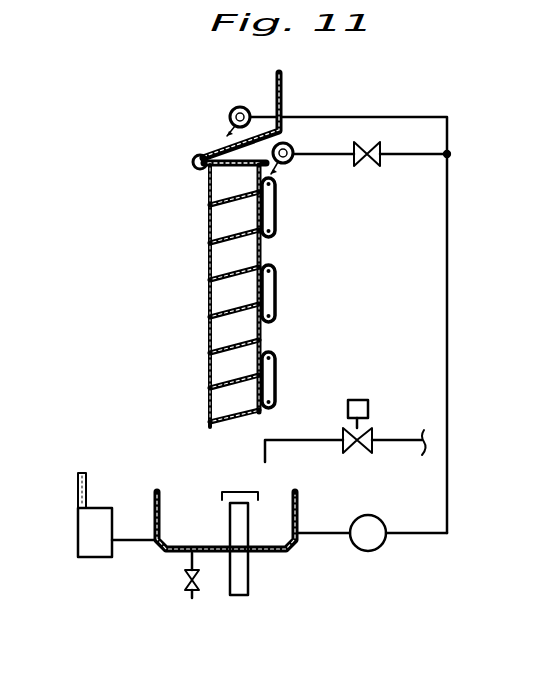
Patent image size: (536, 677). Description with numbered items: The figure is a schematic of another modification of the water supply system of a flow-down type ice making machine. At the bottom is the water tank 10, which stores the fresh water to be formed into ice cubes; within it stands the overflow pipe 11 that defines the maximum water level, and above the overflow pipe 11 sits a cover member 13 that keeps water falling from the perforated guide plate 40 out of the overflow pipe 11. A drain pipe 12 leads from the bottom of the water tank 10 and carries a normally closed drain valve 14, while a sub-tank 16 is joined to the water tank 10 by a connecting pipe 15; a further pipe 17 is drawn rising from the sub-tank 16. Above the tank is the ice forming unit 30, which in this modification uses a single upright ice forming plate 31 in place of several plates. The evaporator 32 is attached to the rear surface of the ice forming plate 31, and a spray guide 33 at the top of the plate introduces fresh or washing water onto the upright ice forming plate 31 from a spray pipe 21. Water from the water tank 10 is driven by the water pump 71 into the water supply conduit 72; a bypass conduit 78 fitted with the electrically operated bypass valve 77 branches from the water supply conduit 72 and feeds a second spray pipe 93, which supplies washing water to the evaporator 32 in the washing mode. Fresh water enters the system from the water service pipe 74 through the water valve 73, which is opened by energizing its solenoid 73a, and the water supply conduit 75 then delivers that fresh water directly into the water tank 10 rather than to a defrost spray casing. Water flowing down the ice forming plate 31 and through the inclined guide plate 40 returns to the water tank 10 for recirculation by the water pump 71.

The water tank 10 is at (299, 500).
The overflow pipe 11 is at (229, 528).
The drain pipe 12 is at (190, 557).
The cover member 13 is at (236, 491).
The drain valve 14 is at (188, 598).
The connecting pipe 15 is at (125, 542).
The sub-tank 16 is at (77, 542).
The supply inlet pipe 17 is at (77, 497).
The spray pipe 21 is at (230, 117).
The ice forming unit 30 is at (226, 295).
The ice forming plate 31 is at (208, 265).
The evaporator 32 is at (275, 212).
The spray guide 33 is at (193, 162).
The guide plate 40 is at (166, 497).
The water pump 71 is at (369, 552).
The water supply conduit 72 is at (410, 116).
The water valve 73 is at (360, 453).
The solenoid 73a is at (357, 400).
The water service pipe 74 is at (395, 440).
The water supply conduit 75 is at (303, 440).
The bypass valve 77 is at (372, 161).
The bypass conduit 78 is at (417, 158).
The spray pipe 93 is at (286, 143).